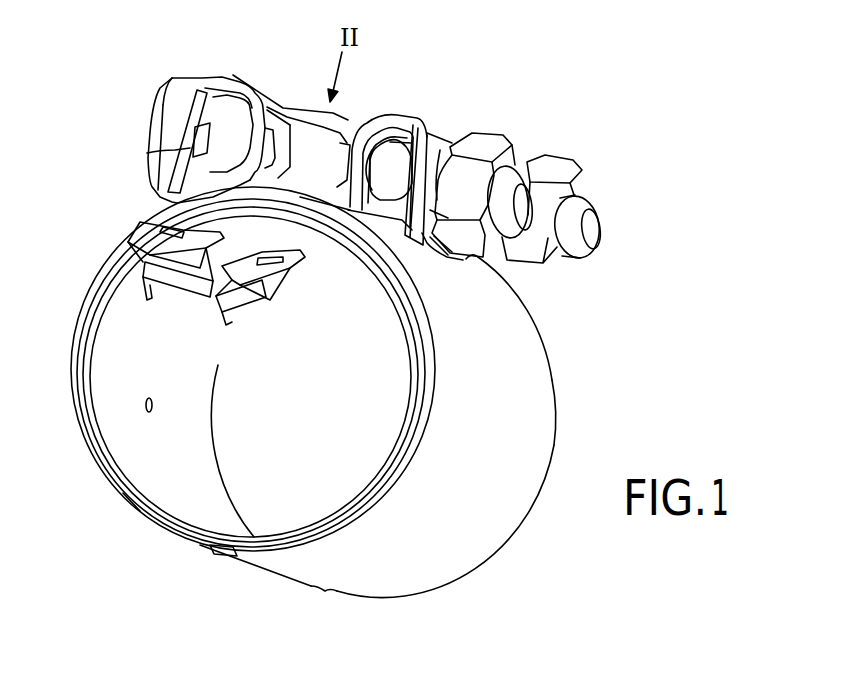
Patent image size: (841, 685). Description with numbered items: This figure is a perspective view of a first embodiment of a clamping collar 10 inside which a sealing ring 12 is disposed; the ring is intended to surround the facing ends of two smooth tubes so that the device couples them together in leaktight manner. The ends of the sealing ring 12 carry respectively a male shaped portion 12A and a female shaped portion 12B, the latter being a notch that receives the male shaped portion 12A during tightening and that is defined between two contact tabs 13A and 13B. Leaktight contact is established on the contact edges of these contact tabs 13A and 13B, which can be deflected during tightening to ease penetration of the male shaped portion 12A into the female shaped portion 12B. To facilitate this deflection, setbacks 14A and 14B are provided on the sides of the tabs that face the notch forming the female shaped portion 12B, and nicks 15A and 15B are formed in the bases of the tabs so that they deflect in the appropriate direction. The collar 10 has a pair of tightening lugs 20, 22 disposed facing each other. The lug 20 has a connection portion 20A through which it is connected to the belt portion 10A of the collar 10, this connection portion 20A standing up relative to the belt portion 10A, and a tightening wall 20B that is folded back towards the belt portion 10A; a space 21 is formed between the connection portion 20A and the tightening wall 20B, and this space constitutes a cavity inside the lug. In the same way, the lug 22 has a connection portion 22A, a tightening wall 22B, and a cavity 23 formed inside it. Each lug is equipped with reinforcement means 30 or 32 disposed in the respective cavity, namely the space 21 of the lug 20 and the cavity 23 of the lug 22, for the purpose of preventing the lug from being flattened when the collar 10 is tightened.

The collar 10 is at (583, 322).
The belt portion 10A is at (553, 384).
The sealing ring 12 is at (212, 432).
The male shaped portion 12A is at (202, 273).
The female shaped portion 12B is at (183, 290).
The contact tab 13A is at (153, 268).
The contact tab 13B is at (233, 313).
The setback 14A is at (135, 230).
The setback 14B is at (247, 280).
The nick 15A is at (145, 292).
The nick 15B is at (207, 320).
The lug 20 is at (256, 72).
The connection portion 20A is at (283, 110).
The tightening wall 20B is at (172, 150).
The space 21 is at (220, 122).
The lug 22 is at (436, 95).
The connection portion 22A is at (360, 123).
The tightening wall 22B is at (423, 237).
The cavity 23 is at (408, 158).
The reinforcement means 30 is at (203, 85).
The reinforcement means 32 is at (400, 133).